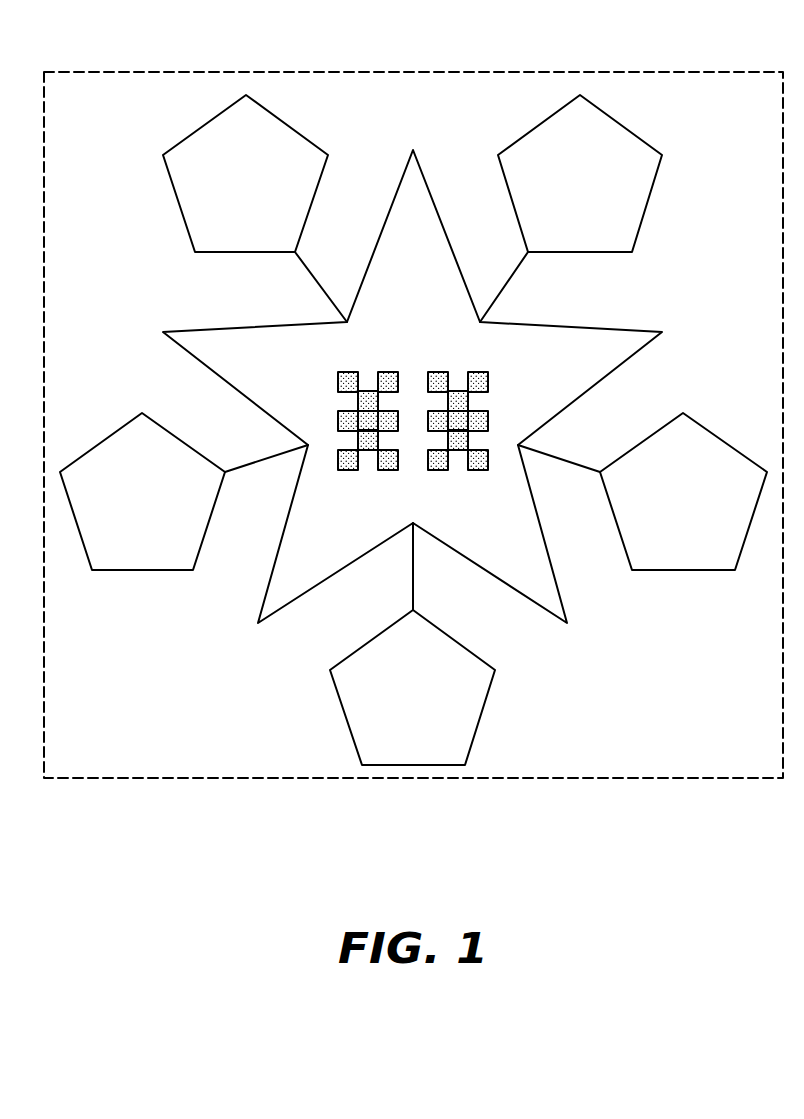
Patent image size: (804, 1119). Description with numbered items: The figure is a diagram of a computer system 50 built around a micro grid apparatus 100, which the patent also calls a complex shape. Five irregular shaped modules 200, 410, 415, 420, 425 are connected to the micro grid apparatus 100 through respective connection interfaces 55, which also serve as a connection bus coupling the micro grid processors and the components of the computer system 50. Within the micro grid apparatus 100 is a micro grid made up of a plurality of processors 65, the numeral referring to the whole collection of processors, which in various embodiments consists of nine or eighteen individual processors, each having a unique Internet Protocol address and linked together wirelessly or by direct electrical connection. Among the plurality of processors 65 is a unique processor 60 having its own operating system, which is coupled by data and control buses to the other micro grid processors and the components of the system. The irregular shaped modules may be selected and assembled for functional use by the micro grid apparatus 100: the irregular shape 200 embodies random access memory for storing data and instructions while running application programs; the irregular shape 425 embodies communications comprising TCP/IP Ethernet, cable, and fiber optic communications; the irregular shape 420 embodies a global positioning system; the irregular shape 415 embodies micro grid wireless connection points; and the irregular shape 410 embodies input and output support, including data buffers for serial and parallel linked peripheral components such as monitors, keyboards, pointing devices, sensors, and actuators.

The computer system 50 is at (70, 80).
The micro grid apparatus 100 is at (200, 320).
The connection interfaces 55 is at (320, 284).
The unique processor 60 is at (483, 380).
The plurality of processors 65 is at (444, 430).
The irregular shape embodying random access memory 200 is at (195, 232).
The irregular shape embodying input and output support 410 is at (138, 563).
The micro grid wireless module of irregular shape 415 is at (345, 680).
The irregular shape embodying a global positioning system 420 is at (683, 563).
The irregular shape embodying communications 425 is at (628, 232).